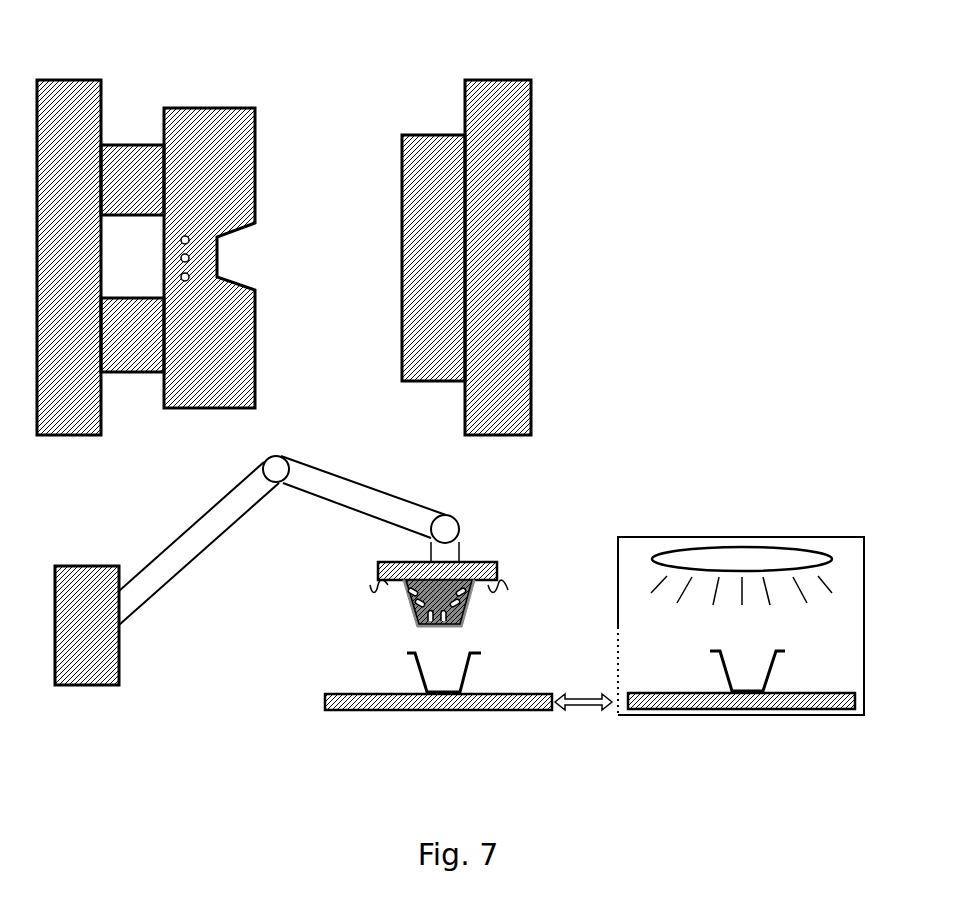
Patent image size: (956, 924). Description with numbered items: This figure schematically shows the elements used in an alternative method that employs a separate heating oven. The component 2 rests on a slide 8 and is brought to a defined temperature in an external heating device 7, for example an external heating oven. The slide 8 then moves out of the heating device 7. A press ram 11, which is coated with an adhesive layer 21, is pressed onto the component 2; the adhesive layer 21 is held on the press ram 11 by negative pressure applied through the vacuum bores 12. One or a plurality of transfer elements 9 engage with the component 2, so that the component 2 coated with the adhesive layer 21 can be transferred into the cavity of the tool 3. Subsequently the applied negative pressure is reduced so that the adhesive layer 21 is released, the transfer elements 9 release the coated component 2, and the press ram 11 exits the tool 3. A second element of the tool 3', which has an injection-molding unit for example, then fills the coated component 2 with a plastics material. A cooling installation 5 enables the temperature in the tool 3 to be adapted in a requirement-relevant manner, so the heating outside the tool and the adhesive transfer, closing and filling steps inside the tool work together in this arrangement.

The tool 3 is at (146, 238).
The second element of the tool 3' is at (466, 220).
The cooling installation 5 is at (190, 276).
The press ram 11 is at (412, 566).
The transfer elements 9 is at (377, 588).
The vacuum bores 12 is at (463, 604).
The adhesive layer 21 is at (420, 620).
The component 2 is at (425, 695).
The slide 8 is at (516, 710).
The heating device 7 is at (737, 717).